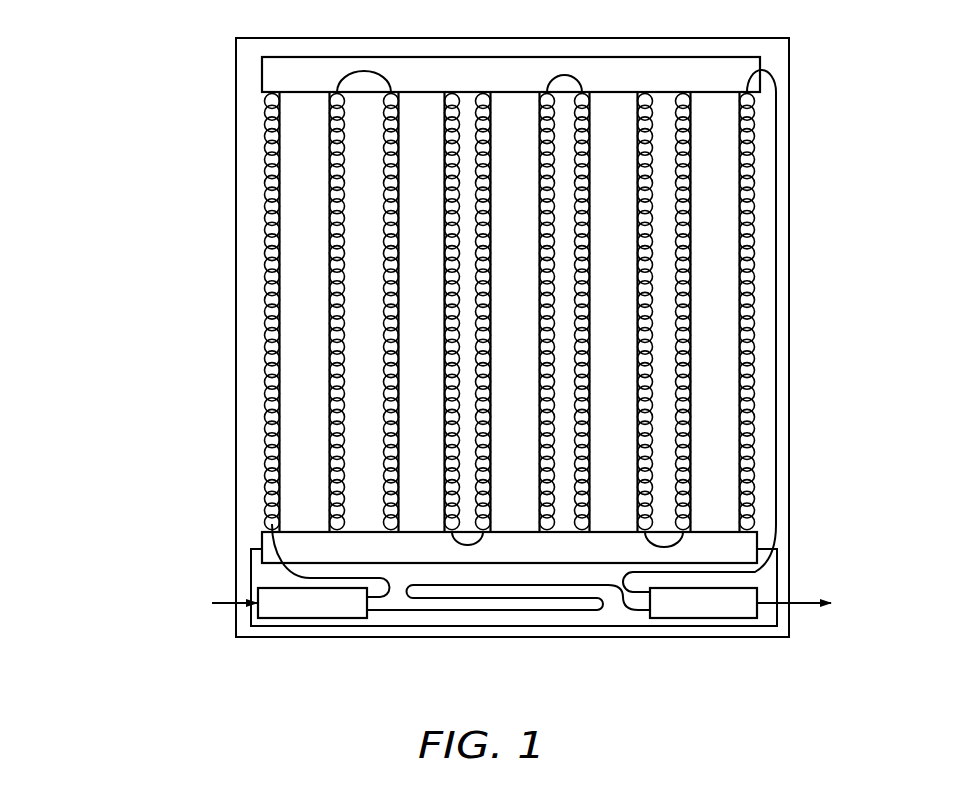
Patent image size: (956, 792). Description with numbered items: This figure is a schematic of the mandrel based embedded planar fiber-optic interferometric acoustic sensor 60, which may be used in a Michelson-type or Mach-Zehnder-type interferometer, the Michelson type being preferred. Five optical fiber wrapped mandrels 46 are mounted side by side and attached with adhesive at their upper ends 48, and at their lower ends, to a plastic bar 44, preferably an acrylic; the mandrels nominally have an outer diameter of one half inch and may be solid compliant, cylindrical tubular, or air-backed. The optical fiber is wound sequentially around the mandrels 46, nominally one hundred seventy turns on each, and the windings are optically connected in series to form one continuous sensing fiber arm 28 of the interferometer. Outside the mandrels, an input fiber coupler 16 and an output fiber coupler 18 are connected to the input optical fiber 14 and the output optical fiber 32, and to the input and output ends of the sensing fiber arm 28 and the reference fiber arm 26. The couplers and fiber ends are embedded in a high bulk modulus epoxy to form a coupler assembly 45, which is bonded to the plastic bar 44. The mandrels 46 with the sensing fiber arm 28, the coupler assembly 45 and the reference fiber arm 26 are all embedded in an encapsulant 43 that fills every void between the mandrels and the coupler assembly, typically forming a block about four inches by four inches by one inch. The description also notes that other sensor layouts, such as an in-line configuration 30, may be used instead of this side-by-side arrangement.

The input optical fiber 14 is at (219, 606).
The input fiber coupler 16 is at (311, 620).
The output fiber coupler 18 is at (713, 620).
The reference fiber arm 26 is at (481, 613).
The sensing fiber arm 28 is at (288, 578).
The in-line sensor configuration 30 is at (262, 532).
The output fiber 32 is at (801, 606).
The encapsulant 43 is at (245, 212).
The plastic bar 44 is at (270, 69).
The coupler assembly 45 is at (603, 610).
The optical fiber wrapped mandrel 46 is at (320, 212).
The upper end 48 is at (252, 80).
The mandrel based planar embedded fiber-optic sensor 60 is at (132, 299).